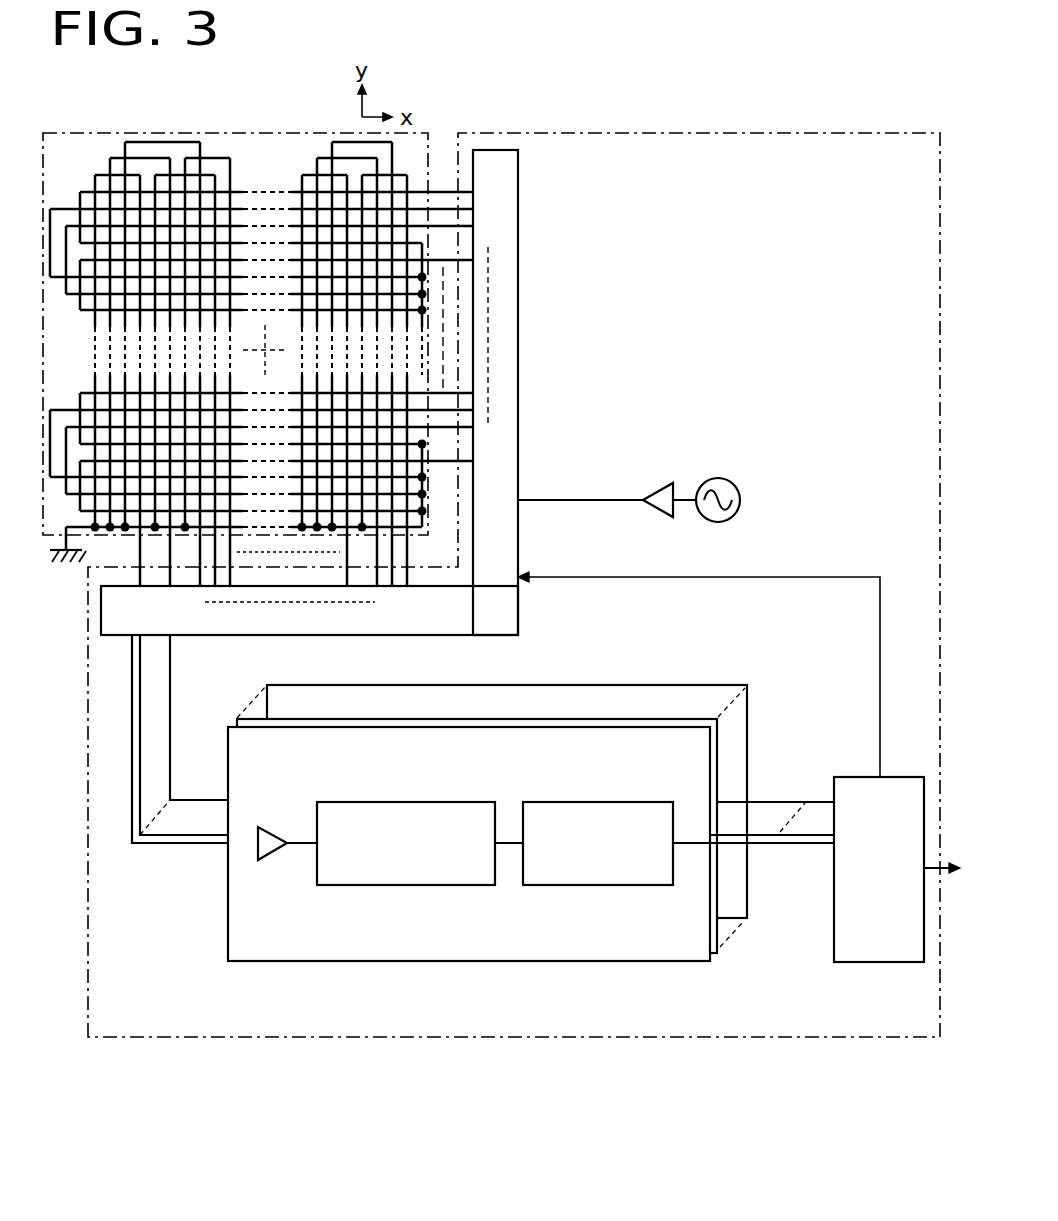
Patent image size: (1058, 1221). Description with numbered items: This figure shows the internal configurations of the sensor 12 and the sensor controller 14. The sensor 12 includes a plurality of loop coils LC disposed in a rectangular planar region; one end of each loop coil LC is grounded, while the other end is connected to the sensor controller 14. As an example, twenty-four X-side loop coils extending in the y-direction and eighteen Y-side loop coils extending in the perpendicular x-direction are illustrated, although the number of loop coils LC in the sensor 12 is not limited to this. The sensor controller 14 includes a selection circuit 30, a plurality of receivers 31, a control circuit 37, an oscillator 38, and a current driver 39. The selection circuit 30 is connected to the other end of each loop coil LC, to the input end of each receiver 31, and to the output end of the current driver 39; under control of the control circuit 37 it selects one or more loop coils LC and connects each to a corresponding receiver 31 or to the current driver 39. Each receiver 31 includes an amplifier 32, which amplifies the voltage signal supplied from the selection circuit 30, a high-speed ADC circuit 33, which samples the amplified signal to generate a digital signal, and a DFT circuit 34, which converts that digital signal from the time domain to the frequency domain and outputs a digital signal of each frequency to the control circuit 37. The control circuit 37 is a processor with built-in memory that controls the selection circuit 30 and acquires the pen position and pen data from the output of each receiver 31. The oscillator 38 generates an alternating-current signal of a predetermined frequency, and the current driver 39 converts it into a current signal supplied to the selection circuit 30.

The sensor 12 is at (263, 133).
The sensor controller 14 is at (517, 1037).
The selection circuit 30 is at (519, 355).
The receiver 31 is at (468, 962).
The amplifier 32 is at (282, 826).
The high-speed analog-to-digital conversion (ADC) circuit 33 is at (404, 801).
The discrete Fourier transform (DFT) circuit 34 is at (597, 801).
The control circuit 37 is at (858, 776).
The oscillator 38 is at (718, 477).
The current driver 39 is at (656, 483).
The loop coil LC is at (168, 135).